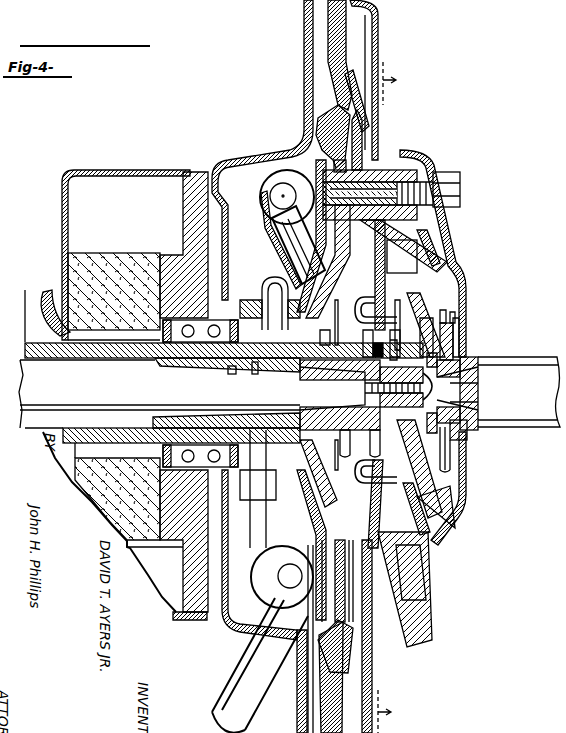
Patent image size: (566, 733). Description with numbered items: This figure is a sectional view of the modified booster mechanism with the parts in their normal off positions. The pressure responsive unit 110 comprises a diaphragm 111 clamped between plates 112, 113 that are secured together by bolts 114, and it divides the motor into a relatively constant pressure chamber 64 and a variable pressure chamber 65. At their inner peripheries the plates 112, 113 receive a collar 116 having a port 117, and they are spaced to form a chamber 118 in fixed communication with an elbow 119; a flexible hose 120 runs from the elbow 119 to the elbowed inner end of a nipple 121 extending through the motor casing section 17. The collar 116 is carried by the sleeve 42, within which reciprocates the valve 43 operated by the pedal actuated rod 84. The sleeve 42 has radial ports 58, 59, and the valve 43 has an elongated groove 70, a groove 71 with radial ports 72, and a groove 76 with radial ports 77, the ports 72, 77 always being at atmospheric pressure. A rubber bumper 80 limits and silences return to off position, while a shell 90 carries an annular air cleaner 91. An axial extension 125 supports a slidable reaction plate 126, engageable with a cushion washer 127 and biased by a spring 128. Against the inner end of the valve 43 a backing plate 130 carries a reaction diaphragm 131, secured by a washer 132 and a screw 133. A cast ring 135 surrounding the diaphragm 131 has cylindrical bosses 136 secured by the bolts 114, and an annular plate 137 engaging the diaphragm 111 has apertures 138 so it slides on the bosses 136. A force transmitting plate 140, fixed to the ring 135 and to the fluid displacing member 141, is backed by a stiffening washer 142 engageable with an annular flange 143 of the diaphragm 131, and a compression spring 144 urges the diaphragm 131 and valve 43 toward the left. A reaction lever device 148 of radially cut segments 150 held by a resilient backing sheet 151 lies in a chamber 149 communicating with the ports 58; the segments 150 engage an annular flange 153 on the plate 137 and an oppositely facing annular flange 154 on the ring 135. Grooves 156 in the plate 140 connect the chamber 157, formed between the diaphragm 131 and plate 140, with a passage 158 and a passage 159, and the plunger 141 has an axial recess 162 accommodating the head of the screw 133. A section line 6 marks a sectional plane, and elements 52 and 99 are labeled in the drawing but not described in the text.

The section line 6 is at (387, 394).
The casing section 17 is at (304, 46).
The sleeve 42 is at (105, 360).
The valve 43 is at (178, 366).
The spring 52 is at (366, 392).
The radial ports 58 is at (310, 380).
The radial ports 59 is at (256, 374).
The constant pressure chamber 64 is at (428, 73).
The variable pressure chamber 65 is at (235, 203).
The elongated groove 70 is at (282, 366).
The circumferential groove 71 is at (330, 458).
The radial ports 72 is at (368, 396).
The groove 76 is at (222, 420).
The radial ports 77 is at (232, 374).
The rubber bumper 80 is at (275, 282).
The pedal actuated rod 84 is at (58, 396).
The shell 90 is at (62, 210).
The annular air cleaner 91 is at (78, 262).
The seal 99 is at (45, 290).
The pressure responsive unit 110 is at (421, 145).
The diaphragm 111 is at (330, 22).
The plate 112 is at (362, 128).
The plate 113 is at (328, 128).
The bolts 114 is at (450, 192).
The collar 116 is at (272, 301).
The port 117 is at (291, 308).
The chamber 118 is at (282, 520).
The elbow 119 is at (272, 243).
The flexible hose 120 is at (263, 190).
The nipple 121 is at (240, 657).
The axial extension 125 is at (455, 342).
The reaction plate 126 is at (432, 312).
The cushion washer 127 is at (352, 374).
The spring 128 is at (342, 332).
The backing plate 130 is at (447, 515).
The reaction diaphragm 131 is at (440, 508).
The washer 132 is at (455, 395).
The screw 133 is at (455, 383).
The cast ring 135 is at (403, 578).
The cylindrical bosses 136 is at (385, 170).
The annular plate 137 is at (366, 55).
The apertures 138 is at (372, 150).
The force transmitting plate 140 is at (450, 253).
The fluid displacing member 141 is at (522, 360).
The stiffening washer 142 is at (456, 328).
The annular flange 143 is at (455, 450).
The compression spring 144 is at (455, 320).
The reaction lever device 148 is at (394, 316).
The chamber 149 is at (412, 295).
The segments 150 is at (398, 587).
The backing sheet 151 is at (396, 275).
The annular flange 153 is at (341, 261).
The annular flange 154 is at (394, 504).
The grooves 156 is at (446, 266).
The chamber 157 is at (440, 490).
The passage 158 is at (435, 228).
The passage 159 is at (305, 178).
The axial recess 162 is at (462, 400).